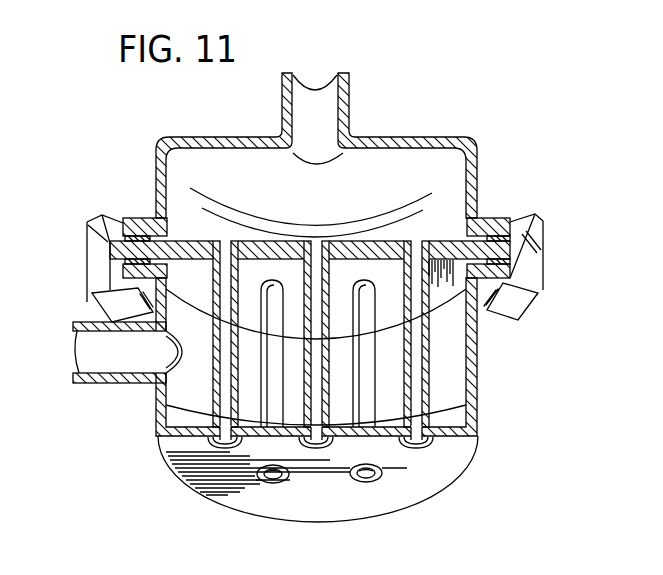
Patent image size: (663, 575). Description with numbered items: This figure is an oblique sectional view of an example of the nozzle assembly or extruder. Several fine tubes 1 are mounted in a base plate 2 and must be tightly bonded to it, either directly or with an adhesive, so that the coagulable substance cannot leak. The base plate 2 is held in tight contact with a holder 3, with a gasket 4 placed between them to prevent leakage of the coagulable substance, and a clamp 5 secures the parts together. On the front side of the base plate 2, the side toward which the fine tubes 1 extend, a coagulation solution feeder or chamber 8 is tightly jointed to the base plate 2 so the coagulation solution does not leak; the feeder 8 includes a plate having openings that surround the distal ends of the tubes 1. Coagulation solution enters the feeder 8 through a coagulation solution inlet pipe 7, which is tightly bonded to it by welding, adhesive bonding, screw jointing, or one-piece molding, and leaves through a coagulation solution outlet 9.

The fine tube 1 is at (213, 403).
The base plate 2 is at (443, 247).
The holder 3 is at (160, 147).
The gasket 4 is at (541, 232).
The clamp 5 is at (87, 238).
The coagulation solution inlet pipe 7 is at (93, 358).
The coagulation solution feeder 8 is at (208, 493).
The coagulation solution outlet 9 is at (378, 480).